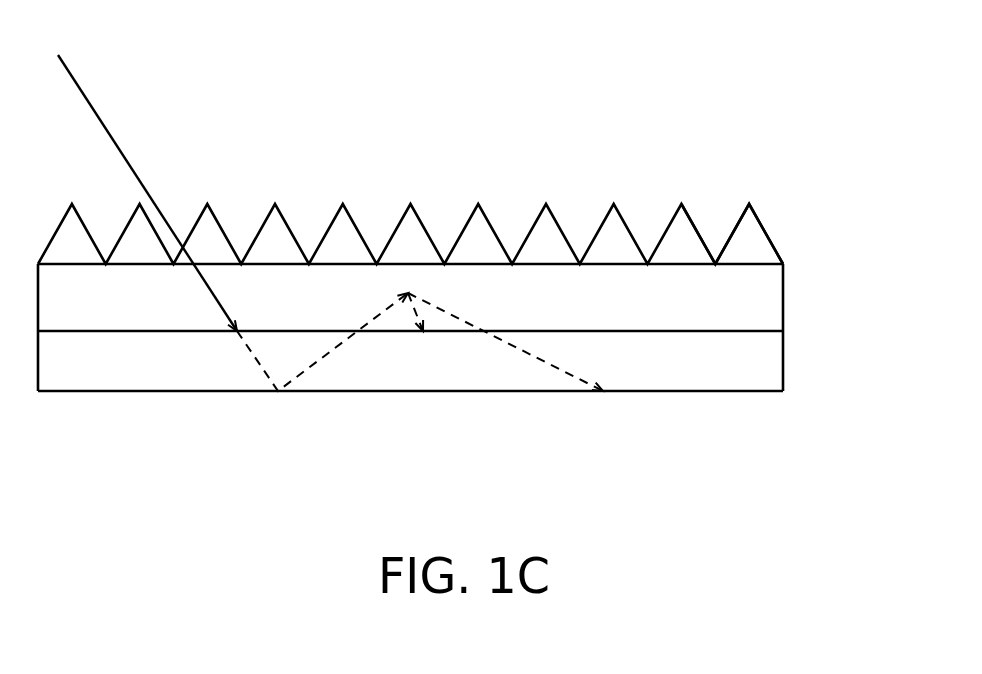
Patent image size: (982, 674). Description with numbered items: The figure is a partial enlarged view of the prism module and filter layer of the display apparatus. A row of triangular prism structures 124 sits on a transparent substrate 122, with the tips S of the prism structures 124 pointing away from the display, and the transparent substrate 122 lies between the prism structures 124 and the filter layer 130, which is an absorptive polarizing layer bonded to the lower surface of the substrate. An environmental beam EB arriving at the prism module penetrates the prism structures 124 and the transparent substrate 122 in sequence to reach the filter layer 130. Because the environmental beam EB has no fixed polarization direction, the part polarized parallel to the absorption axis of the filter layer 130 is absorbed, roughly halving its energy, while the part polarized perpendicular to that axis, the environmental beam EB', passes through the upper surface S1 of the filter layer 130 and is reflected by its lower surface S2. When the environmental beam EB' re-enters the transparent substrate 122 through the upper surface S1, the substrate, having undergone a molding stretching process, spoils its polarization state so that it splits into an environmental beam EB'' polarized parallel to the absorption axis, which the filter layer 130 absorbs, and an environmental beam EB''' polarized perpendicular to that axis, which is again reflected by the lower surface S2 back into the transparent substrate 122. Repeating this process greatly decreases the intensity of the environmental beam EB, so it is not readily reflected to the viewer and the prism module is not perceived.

The prism structures 124 is at (756, 240).
The transparent substrate 122 is at (767, 282).
The filter layer 130 is at (767, 363).
The tips S is at (750, 203).
The upper surface S1 is at (750, 330).
The lower surface S2 is at (750, 393).
The environmental beam EB is at (147, 166).
The environmental beam EB' is at (322, 394).
The environmental beam EB'' is at (417, 394).
The environmental beam EB''' is at (505, 393).